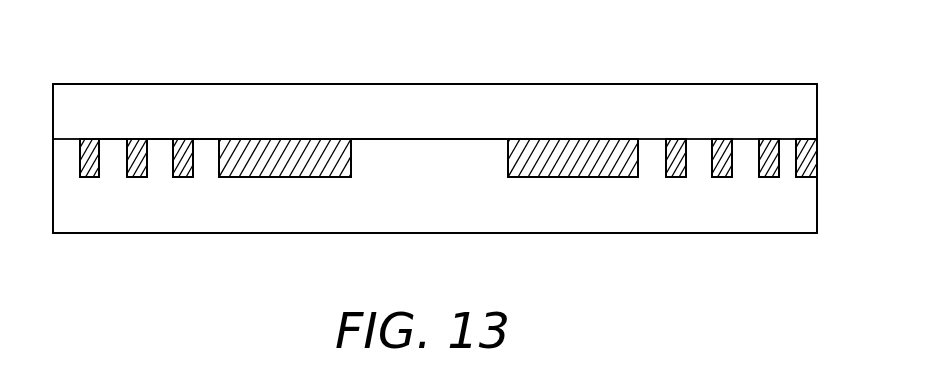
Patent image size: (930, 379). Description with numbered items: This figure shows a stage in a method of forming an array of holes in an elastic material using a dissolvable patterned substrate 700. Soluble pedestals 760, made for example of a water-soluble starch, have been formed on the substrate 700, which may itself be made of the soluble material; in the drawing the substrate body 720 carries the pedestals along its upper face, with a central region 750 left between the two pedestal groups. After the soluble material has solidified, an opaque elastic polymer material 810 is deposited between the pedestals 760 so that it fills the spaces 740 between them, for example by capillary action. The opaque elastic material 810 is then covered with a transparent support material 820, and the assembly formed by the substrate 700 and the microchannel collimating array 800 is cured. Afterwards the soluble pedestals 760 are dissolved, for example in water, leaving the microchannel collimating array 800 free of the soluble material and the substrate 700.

The substrate 700 is at (636, 246).
The substrate body 720 is at (95, 220).
The spaces 740 is at (447, 163).
The central region 750 is at (432, 155).
The pedestals 760 is at (205, 148).
The microchannel collimating array 800 is at (603, 72).
The opaque elastic polymer material 810 is at (138, 138).
The transparent support material 820 is at (412, 83).